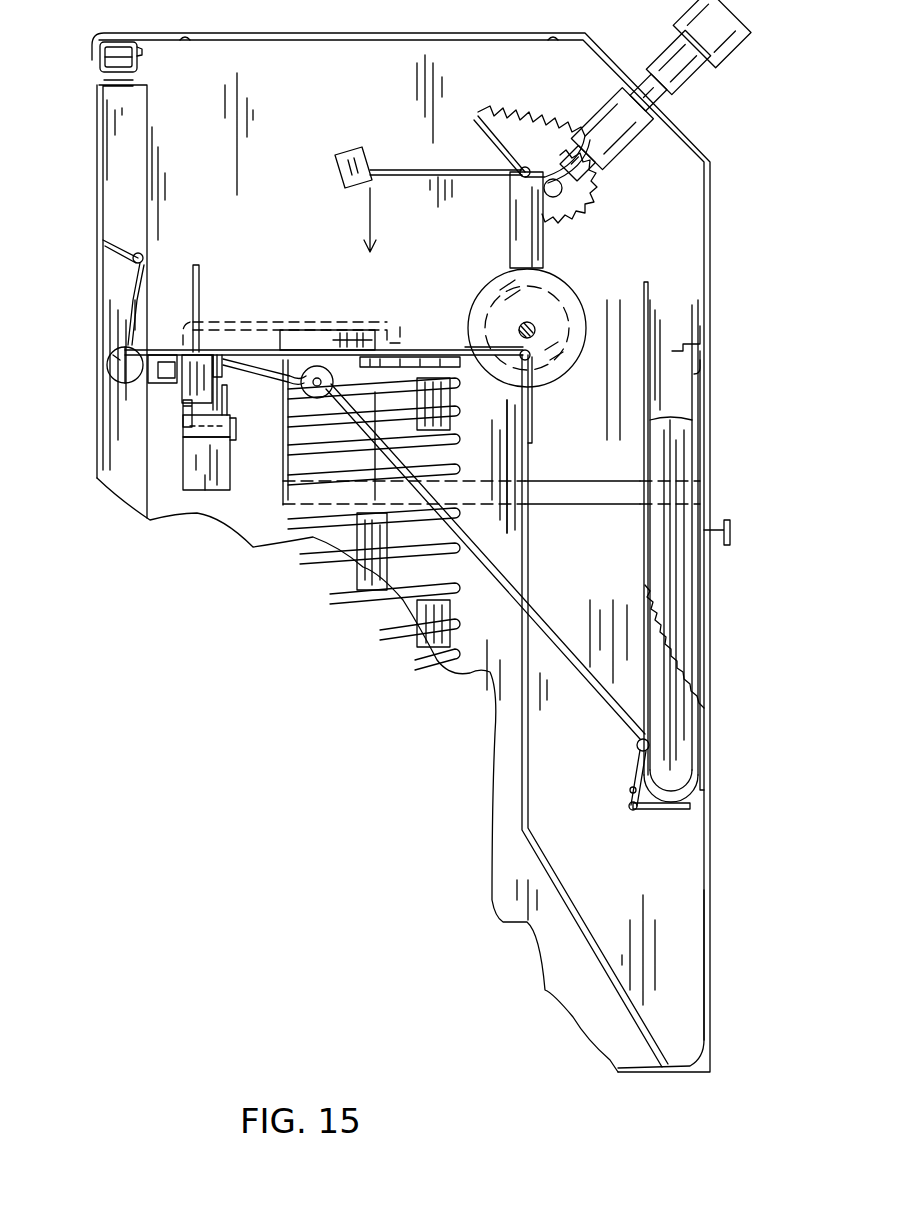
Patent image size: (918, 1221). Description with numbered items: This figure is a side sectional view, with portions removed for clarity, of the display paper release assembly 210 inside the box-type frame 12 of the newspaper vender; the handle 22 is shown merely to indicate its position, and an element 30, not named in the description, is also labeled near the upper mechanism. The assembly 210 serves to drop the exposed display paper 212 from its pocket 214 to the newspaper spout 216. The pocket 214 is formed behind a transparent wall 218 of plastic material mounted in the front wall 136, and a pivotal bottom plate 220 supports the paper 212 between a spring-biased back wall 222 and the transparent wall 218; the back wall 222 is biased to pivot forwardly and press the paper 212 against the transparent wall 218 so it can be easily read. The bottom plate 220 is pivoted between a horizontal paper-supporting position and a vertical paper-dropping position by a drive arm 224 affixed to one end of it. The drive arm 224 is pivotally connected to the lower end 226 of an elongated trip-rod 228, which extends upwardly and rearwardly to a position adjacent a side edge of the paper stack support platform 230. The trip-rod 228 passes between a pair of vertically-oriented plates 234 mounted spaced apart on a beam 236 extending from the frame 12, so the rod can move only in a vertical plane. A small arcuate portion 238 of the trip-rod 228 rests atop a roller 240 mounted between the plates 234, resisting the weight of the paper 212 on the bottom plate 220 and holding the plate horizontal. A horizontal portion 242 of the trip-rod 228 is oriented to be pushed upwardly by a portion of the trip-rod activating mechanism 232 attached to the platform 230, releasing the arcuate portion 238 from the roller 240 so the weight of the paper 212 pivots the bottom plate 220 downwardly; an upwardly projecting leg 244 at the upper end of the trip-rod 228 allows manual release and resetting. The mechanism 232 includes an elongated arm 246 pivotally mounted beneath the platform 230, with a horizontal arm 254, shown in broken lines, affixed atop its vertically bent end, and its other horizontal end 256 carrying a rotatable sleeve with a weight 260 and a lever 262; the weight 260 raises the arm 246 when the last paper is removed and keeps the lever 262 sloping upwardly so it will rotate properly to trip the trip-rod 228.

The box-type frame 12 is at (708, 198).
The handle 22 is at (655, 90).
The sector gear link 30 is at (356, 156).
The front wall 136 is at (708, 310).
The display paper release assembly 210 is at (180, 551).
The display paper 212 is at (677, 622).
The pocket 214 is at (676, 390).
The newspaper spout 216 is at (683, 1025).
The transparent wall 218 is at (700, 452).
The bottom plate 220 is at (678, 809).
The back wall 222 is at (650, 290).
The drive arm 224 is at (633, 782).
The lower end 226 is at (636, 745).
The trip-rod 228 is at (505, 570).
The paper stack support platform 230 is at (445, 352).
The trip-rod activating mechanism 232 is at (236, 274).
The vertical plates 234 is at (348, 345).
The beam 236 is at (510, 490).
The arcuate portion 238 is at (319, 375).
The roller 240 is at (298, 364).
The horizontal portion 242 is at (262, 345).
The upwardly projecting leg 244 is at (198, 282).
The elongated arm 246 is at (183, 418).
The horizontal arm 254 is at (398, 320).
The horizontal end 256 is at (237, 438).
The weight 260 is at (215, 480).
The lever 262 is at (228, 402).